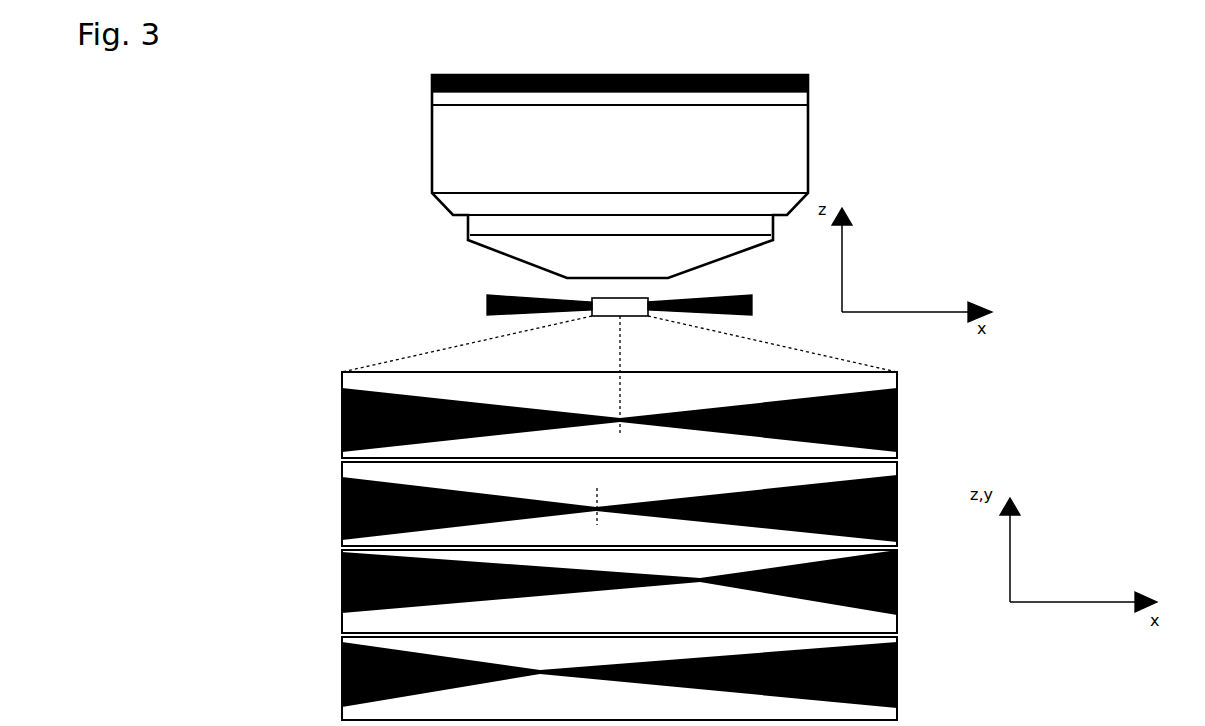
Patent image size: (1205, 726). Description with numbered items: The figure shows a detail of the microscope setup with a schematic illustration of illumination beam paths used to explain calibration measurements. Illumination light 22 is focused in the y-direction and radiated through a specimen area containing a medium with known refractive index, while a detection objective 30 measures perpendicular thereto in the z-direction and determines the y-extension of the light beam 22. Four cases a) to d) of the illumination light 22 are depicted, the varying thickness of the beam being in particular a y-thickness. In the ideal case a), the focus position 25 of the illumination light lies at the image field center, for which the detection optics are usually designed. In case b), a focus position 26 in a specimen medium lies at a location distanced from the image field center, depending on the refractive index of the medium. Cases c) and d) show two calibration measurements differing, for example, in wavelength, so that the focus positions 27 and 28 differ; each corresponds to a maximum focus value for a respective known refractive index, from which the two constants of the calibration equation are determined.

The illumination light 22 is at (572, 505).
The focus position 25 is at (623, 418).
The focus position 26 is at (598, 506).
The focus position 27 is at (702, 583).
The focus position 28 is at (543, 675).
The detection objective 30 is at (810, 142).